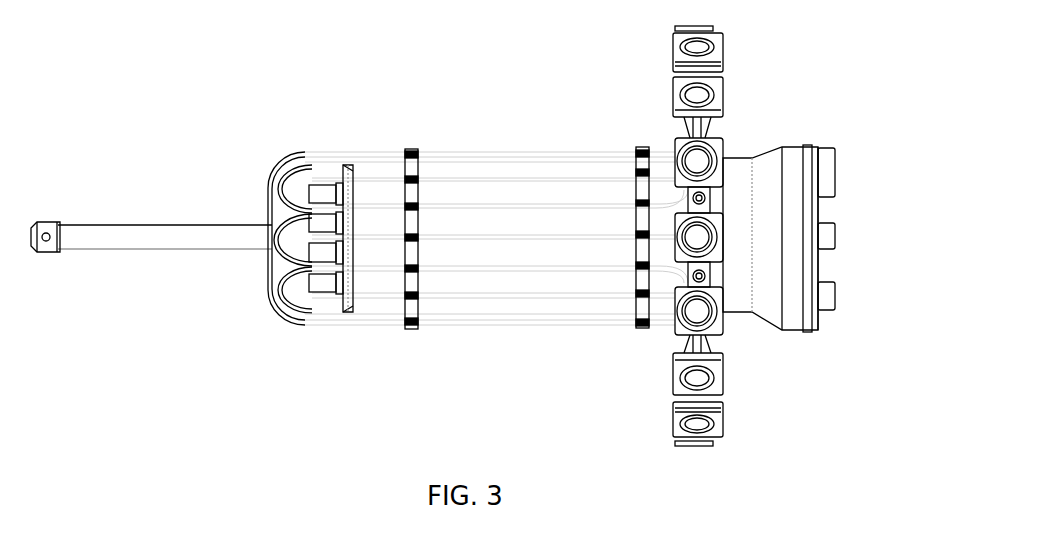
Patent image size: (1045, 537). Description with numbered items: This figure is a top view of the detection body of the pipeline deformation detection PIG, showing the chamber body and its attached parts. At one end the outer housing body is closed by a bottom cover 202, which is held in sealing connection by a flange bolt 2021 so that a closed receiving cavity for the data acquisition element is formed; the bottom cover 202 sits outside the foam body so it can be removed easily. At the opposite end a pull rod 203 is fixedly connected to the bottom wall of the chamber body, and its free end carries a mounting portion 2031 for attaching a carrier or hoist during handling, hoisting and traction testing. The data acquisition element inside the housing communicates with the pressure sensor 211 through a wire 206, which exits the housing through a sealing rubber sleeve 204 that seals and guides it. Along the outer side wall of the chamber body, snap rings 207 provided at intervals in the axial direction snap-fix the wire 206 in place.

The bottom cover 202 is at (812, 185).
The flange bolt 2021 is at (833, 233).
The pull rod 203 is at (150, 232).
The mounting portion 2031 is at (47, 252).
The sealing rubber sleeve 204 is at (330, 197).
The wire 206 is at (324, 156).
The snap ring 207 is at (412, 165).
The pressure sensor 211 is at (700, 160).